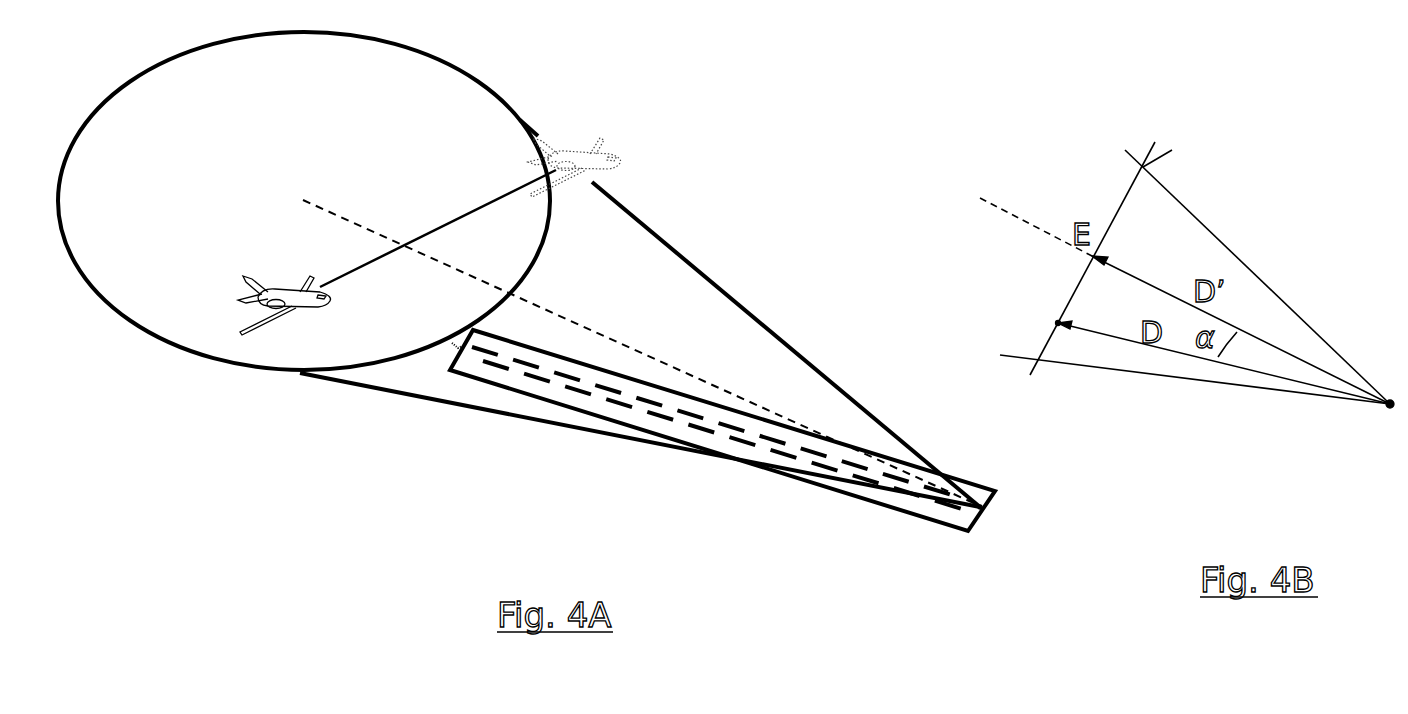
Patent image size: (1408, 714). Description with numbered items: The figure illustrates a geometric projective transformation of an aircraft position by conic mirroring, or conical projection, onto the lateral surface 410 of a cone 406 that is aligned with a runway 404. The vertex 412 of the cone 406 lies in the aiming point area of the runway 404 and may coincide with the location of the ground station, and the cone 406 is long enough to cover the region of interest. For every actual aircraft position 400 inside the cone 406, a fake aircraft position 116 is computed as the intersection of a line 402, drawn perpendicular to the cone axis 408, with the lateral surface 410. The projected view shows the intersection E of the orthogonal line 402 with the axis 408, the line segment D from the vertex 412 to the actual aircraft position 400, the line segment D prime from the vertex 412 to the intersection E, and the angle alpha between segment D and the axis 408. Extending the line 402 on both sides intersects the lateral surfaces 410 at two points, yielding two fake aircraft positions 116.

In FIG. 4A, the fake aircraft position 116 is at (573, 186).
In FIG. 4B, the fake aircraft position 116 is at (1055, 390).
In FIG. 4A, the actual aircraft position 400 is at (242, 272).
In FIG. 4B, the actual aircraft position 400 is at (1055, 323).
In FIG. 4A, the line 402 is at (478, 205).
In FIG. 4B, the line 402 is at (1113, 207).
In FIG. 4A, the runway 404 is at (628, 408).
In FIG. 4A, the cone 406 is at (753, 362).
In FIG. 4A, the cone axis 408 is at (333, 213).
In FIG. 4B, the cone axis 408 is at (997, 208).
In FIG. 4A, the lateral surface 410 is at (670, 250).
In FIG. 4B, the lateral surface 410 is at (1243, 265).
In FIG. 4A, the vertex 412 is at (985, 510).
In FIG. 4B, the vertex 412 is at (1384, 412).